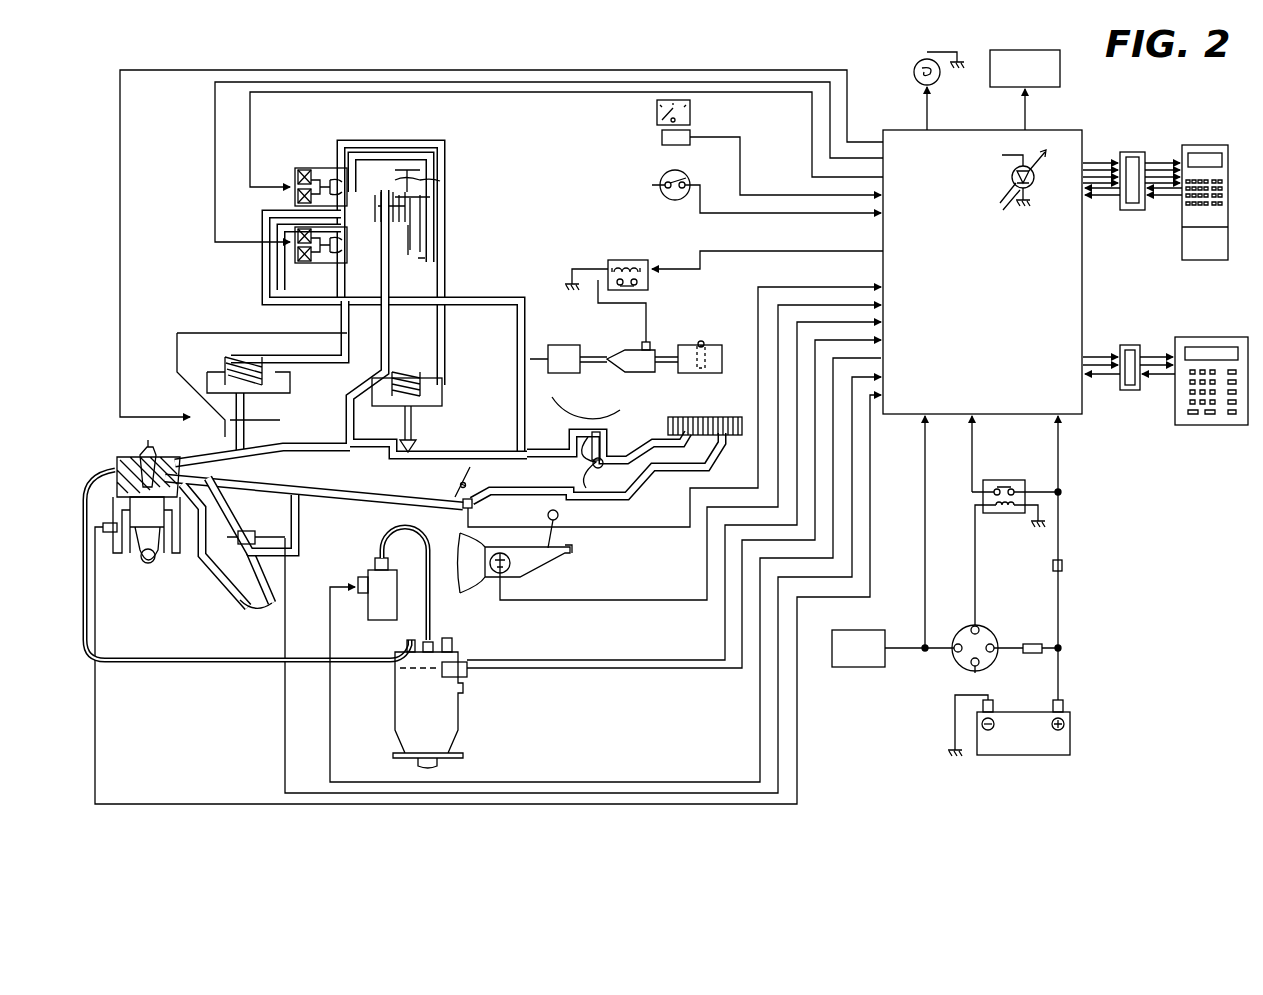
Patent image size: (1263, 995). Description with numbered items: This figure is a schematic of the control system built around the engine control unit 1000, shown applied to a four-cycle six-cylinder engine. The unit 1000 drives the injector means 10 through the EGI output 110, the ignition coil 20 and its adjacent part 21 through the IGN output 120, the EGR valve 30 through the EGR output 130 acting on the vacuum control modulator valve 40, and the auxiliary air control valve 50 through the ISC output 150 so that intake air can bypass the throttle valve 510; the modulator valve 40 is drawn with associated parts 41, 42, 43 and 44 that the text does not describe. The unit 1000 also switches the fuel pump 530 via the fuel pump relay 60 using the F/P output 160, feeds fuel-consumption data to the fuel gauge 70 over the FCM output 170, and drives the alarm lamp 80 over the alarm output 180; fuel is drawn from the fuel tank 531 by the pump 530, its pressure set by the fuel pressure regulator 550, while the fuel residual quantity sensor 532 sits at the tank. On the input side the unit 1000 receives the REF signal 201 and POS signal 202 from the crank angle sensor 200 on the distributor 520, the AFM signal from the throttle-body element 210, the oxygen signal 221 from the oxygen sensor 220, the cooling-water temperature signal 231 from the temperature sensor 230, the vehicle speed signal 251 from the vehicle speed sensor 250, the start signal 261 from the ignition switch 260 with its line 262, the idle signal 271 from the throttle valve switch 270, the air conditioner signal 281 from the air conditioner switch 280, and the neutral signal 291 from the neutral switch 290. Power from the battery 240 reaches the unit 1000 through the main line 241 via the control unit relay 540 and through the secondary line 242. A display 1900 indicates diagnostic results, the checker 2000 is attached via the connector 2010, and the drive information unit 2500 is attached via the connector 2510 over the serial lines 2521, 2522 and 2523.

The injector means 10 is at (192, 445).
The ignition coil 20 is at (380, 560).
The igniter 21 is at (358, 580).
The EGR valve 30 is at (243, 357).
The vacuum control modulator valve 40 is at (419, 261).
The solenoid valve 41 is at (298, 258).
The solenoid valve 42 is at (306, 175).
The valve member 43 is at (430, 175).
The spring 44 is at (400, 196).
The auxiliary air control valve 50 is at (442, 392).
The fuel pump relay 60 is at (628, 260).
The fuel gauge 70 is at (1060, 55).
The alarm 80 is at (913, 68).
The EGI output 110 is at (120, 222).
The ignition output 120 is at (330, 676).
The EGR output 130 is at (215, 108).
The ISC output 150 is at (250, 113).
The fuel pump output 160 is at (660, 270).
The FCM output 170 is at (1025, 100).
The alarm output 180 is at (927, 98).
The crank angle sensor 200 is at (458, 660).
The reference signal 201 is at (546, 660).
The position signal 202 is at (545, 668).
The throttle sensor 210 is at (600, 452).
The O2 sensor 220 is at (258, 520).
The O2 signal 221 is at (285, 736).
The temperature sensor 230 is at (110, 532).
The cooling water temperature signal 231 is at (95, 620).
The battery 240 is at (1028, 755).
The main line 241 is at (975, 447).
The secondary line 242 is at (1058, 480).
The vehicle speed sensor 250 is at (660, 137).
The vehicle speed signal 251 is at (740, 165).
The ignition switch 260 is at (998, 637).
The start signal 261 is at (923, 553).
The ignition switch line 262 is at (975, 522).
The throttle valve switch 270 is at (472, 506).
The idle signal 271 is at (572, 508).
The air conditioner switch 280 is at (660, 176).
The air conditioner signal 281 is at (705, 213).
The neutral switch 290 is at (505, 560).
The neutral signal 291 is at (595, 600).
The throttle valve 510 is at (470, 470).
The distributor 520 is at (462, 715).
The fuel pump 530 is at (628, 350).
The fuel tank 531 is at (700, 345).
The fuel residual quantity sensor 532 is at (697, 372).
The control unit relay 540 is at (1003, 513).
The fuel pressure regulator 550 is at (563, 345).
The engine control unit 1000 is at (1040, 267).
The display 1900 is at (1012, 180).
The checker 2000 is at (1180, 243).
The connector 2010 is at (1132, 210).
The drive information unit 2500 is at (1222, 425).
The connector 2510 is at (1128, 390).
The SIO input 2521 is at (1095, 357).
The SIO clock 2522 is at (1110, 365).
The SIO output 2523 is at (1100, 374).